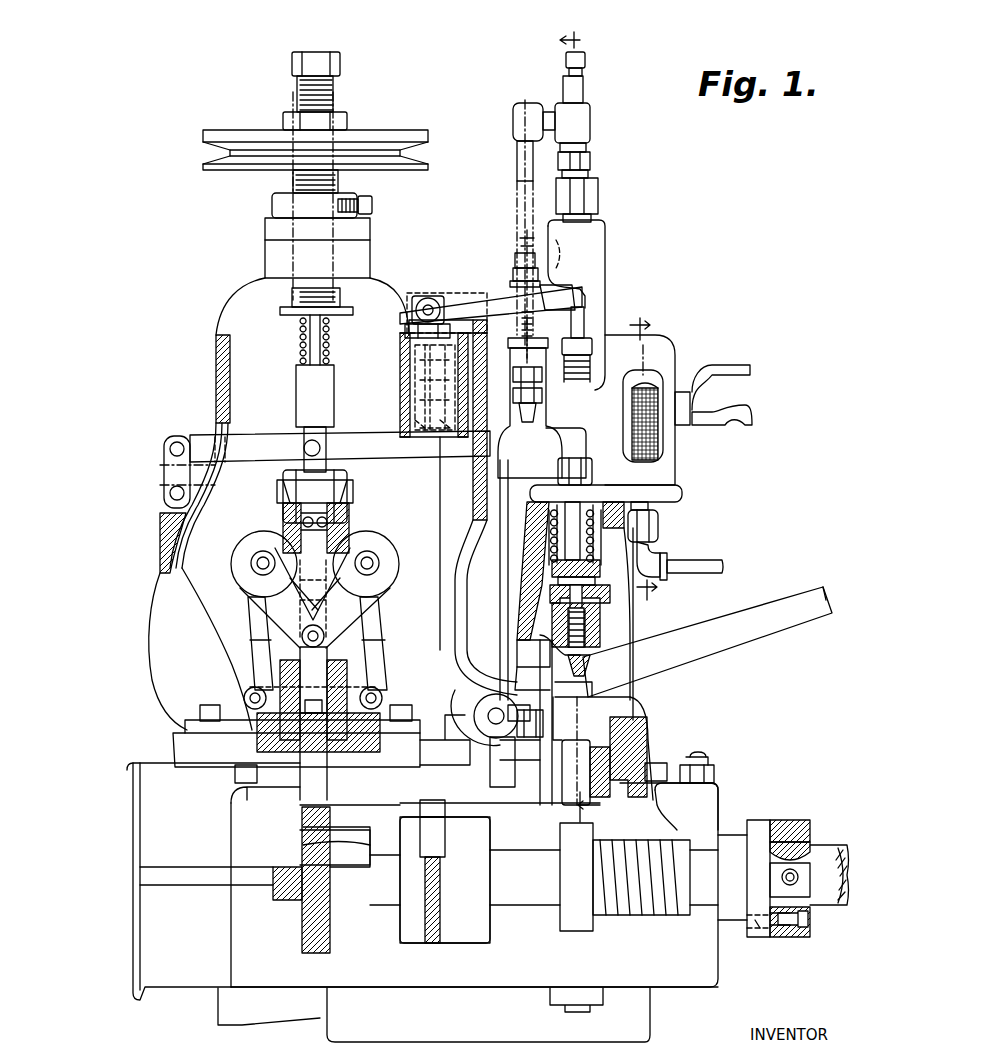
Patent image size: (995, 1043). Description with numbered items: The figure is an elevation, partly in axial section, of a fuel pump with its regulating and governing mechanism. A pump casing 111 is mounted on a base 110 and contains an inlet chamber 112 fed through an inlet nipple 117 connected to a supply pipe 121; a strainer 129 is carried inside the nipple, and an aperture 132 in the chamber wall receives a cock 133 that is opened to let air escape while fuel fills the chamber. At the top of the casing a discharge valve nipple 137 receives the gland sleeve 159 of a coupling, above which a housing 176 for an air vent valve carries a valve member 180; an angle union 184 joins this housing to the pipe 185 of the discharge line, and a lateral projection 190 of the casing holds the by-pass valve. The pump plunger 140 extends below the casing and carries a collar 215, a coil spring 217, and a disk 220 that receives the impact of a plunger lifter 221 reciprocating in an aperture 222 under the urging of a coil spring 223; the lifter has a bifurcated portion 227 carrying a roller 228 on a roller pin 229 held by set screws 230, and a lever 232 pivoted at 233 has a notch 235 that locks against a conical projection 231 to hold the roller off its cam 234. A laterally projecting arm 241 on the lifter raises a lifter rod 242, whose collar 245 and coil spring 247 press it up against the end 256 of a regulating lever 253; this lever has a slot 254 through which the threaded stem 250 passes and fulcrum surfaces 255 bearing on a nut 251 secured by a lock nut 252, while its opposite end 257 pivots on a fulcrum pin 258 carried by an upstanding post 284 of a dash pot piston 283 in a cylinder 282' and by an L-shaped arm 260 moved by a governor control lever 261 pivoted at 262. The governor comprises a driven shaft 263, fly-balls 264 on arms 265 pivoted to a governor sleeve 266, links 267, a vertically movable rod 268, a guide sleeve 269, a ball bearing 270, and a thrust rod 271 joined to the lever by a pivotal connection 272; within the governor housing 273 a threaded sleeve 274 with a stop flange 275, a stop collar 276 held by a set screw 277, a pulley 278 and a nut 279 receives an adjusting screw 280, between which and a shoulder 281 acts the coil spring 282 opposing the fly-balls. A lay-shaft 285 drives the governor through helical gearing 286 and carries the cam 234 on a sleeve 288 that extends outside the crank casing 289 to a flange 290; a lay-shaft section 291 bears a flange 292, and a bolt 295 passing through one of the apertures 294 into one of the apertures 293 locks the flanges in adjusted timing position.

The adjusting screw 280 is at (297, 95).
The nut 279 is at (341, 120).
The pulley 278 is at (366, 134).
The exteriorly threaded sleeve 274 is at (296, 182).
The set screw 277 is at (370, 201).
The stop collar 276 is at (282, 209).
The governor housing 273 is at (278, 252).
The stop flange 275 is at (282, 309).
The upstanding post 284 is at (397, 342).
The L-shaped arm 260 is at (402, 381).
The cylinder 282' is at (383, 387).
The piston 283 is at (402, 419).
The fulcrum pin 258 is at (418, 300).
The end of regulating lever 257 is at (430, 296).
The regulating lever 253 is at (490, 302).
The coil spring 282 is at (284, 340).
The shoulder 281 is at (302, 391).
The pivot 262 is at (176, 440).
The governor control lever 261 is at (374, 458).
The pivotal connection 272 is at (306, 443).
The thrust rod 271 is at (312, 487).
The ball bearing 270 is at (288, 500).
The vertically movable rod 268 is at (350, 520).
The guide sleeve 269 is at (292, 530).
The fly-balls 264 is at (352, 545).
The links 267 is at (268, 585).
The arms 265 is at (252, 665).
The governor sleeve 266 is at (250, 694).
The driven shaft 263 is at (322, 688).
The valve member 180 is at (586, 58).
The angle union 184 is at (530, 120).
The housing 176 is at (582, 120).
The gland sleeve 159 is at (586, 157).
The discharge valve nipple 137 is at (597, 216).
The pipe 185 is at (520, 165).
The lock nut 252 is at (520, 256).
The nut 251 is at (516, 273).
The fulcrum surface 255 is at (545, 272).
The slot 254 is at (580, 268).
The end of regulating lever 256 is at (585, 290).
The threaded stem 250 is at (585, 316).
The lifter rod 242 is at (592, 340).
The coil spring 247 is at (592, 382).
The collar 245 is at (643, 348).
The lateral projection 190 is at (512, 455).
The pump casing 111 is at (665, 350).
The inlet chamber 112 is at (690, 372).
The strainer 129 is at (652, 440).
The aperture 132 is at (732, 363).
The cock 133 is at (720, 392).
The base 110 is at (535, 512).
The coil spring 217 is at (552, 540).
The pump plunger 140 is at (568, 540).
The collar 215 is at (552, 566).
The disk 220 is at (552, 600).
The aperture 222 is at (552, 606).
The conical projection 231 is at (590, 662).
The laterally projecting arm 241 is at (602, 634).
The notch 235 is at (572, 675).
The coil spring 223 is at (542, 641).
The pivot 233 is at (495, 707).
The inlet nipple 117 is at (660, 517).
The supply pipe 121 is at (662, 565).
The lever 232 is at (745, 633).
The plunger lifter 221 is at (600, 696).
The bifurcated portion 227 is at (598, 711).
The roller 228 is at (612, 742).
The roller pin 229 is at (660, 758).
The set screws 230 is at (700, 772).
The crank casing 289 is at (422, 873).
The helical gearing 286 is at (290, 905).
The lay-shaft 285 is at (532, 905).
The cam 234 is at (570, 838).
The sleeve 288 is at (680, 830).
The flange 290 is at (758, 828).
The flange 292 is at (800, 826).
The lay-shaft section 291 is at (806, 853).
The bolt 295 is at (800, 926).
The apertures 294 is at (785, 940).
The apertures 293 is at (758, 945).